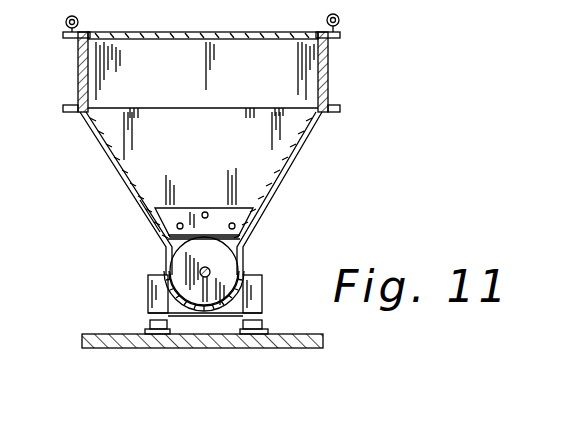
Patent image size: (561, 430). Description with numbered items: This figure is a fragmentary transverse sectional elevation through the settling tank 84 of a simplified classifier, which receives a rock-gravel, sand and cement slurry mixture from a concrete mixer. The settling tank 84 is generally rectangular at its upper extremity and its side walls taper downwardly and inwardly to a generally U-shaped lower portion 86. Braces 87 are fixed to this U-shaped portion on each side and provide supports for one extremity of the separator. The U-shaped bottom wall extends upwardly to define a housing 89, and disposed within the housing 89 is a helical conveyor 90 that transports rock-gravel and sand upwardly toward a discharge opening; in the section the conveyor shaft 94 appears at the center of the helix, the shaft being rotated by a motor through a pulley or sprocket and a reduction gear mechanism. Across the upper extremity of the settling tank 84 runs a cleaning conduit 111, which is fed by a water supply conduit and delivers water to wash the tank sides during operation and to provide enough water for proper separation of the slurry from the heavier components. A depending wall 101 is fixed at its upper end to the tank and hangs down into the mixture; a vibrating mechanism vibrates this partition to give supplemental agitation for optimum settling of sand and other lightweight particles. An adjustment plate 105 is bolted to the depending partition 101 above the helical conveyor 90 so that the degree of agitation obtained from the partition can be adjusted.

The settling tank 84 is at (78, 68).
The cleaning conduit 111 is at (195, 32).
The depending wall 101 is at (148, 171).
The housing 89 is at (138, 196).
The adjustment plate 105 is at (202, 207).
The helical conveyor 90 is at (218, 255).
The conveyor shaft 94 is at (225, 272).
The U-shaped lower portion 86 is at (166, 259).
The braces 87 is at (148, 290).